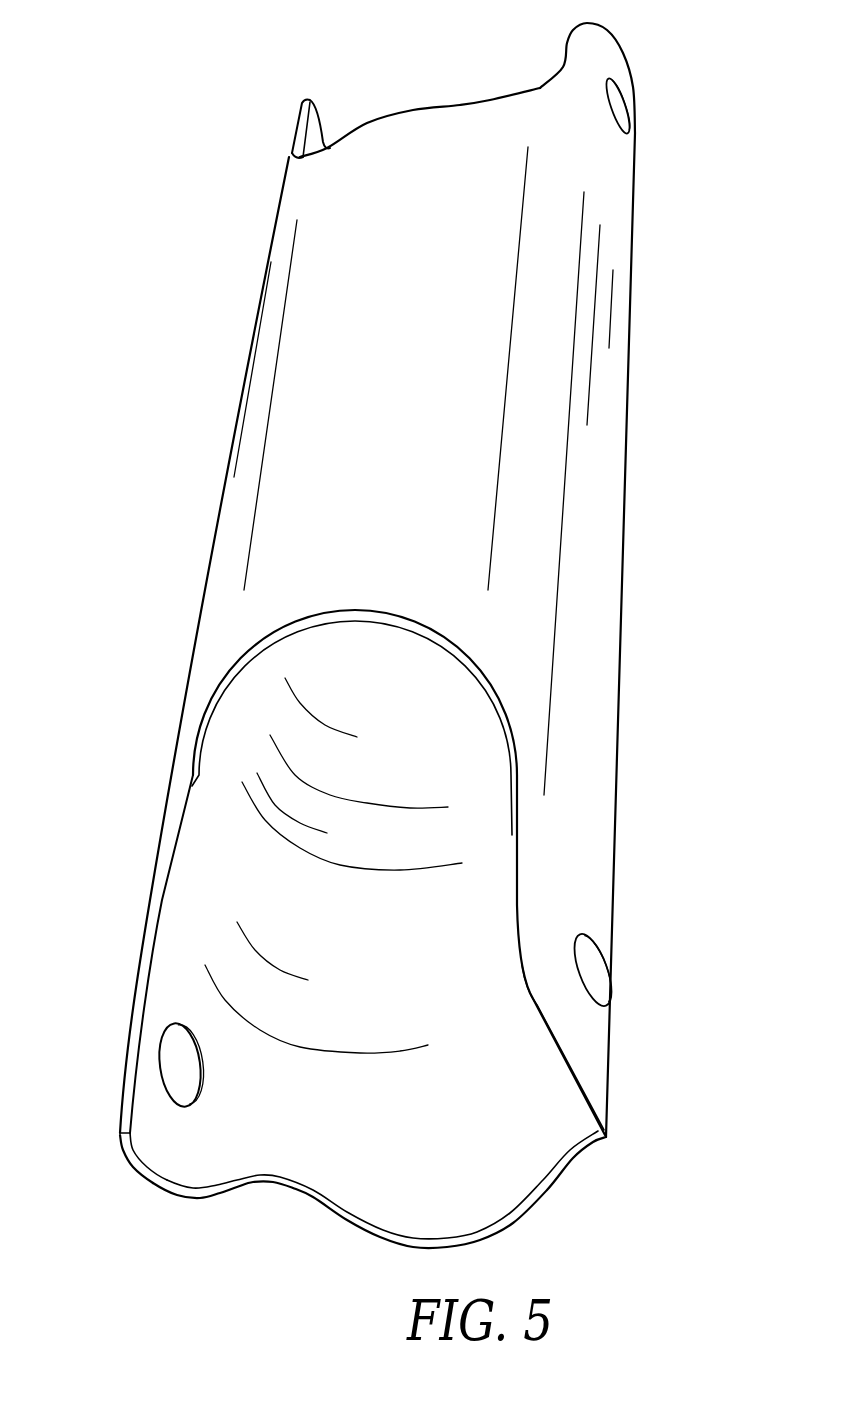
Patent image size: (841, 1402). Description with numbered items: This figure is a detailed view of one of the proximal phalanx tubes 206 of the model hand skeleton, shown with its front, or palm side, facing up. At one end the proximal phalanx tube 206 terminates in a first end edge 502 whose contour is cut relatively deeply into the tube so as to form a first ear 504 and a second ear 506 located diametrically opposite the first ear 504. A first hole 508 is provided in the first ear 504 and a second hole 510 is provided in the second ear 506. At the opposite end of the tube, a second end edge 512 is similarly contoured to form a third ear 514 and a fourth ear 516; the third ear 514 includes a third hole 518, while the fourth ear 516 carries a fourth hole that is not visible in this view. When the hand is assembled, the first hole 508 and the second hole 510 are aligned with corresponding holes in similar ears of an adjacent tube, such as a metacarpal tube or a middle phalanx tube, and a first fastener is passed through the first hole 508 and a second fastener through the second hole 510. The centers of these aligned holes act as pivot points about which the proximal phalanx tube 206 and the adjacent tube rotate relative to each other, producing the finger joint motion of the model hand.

The proximal phalanx tube 206 is at (537, 528).
The first end edge 502 is at (272, 1185).
The first ear 504 is at (152, 1132).
The second ear 506 is at (570, 1027).
The first hole 508 is at (163, 1042).
The second hole 510 is at (594, 970).
The second end edge 512 is at (370, 125).
The third ear 514 is at (605, 50).
The fourth ear 516 is at (298, 123).
The third hole 518 is at (625, 108).